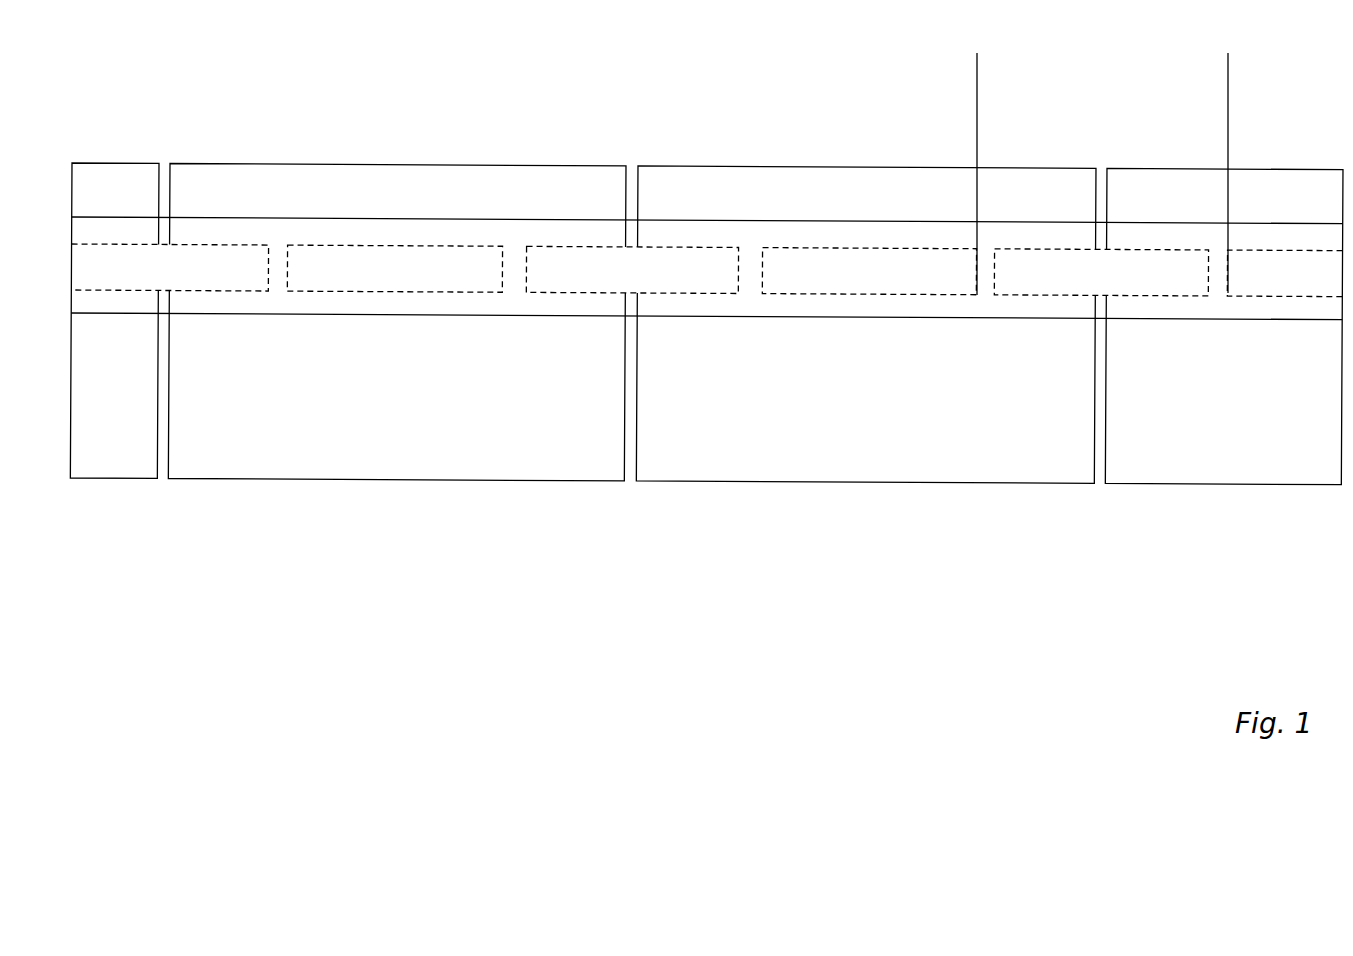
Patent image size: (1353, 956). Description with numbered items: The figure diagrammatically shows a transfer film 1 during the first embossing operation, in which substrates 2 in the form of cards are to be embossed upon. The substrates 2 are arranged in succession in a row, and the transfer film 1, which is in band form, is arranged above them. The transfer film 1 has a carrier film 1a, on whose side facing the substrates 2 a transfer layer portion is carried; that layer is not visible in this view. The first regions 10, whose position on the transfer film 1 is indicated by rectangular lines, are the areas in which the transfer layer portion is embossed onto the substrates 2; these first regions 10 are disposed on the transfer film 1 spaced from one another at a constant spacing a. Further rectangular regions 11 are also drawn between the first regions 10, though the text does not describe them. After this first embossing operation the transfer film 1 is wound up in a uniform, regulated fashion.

The transfer film 1 is at (1152, 325).
The carrier film 1a is at (1228, 303).
The substrates 2 is at (679, 447).
The first regions 10 is at (443, 262).
The second connecting elements 11 is at (543, 270).
The constant spacing a is at (1228, 79).